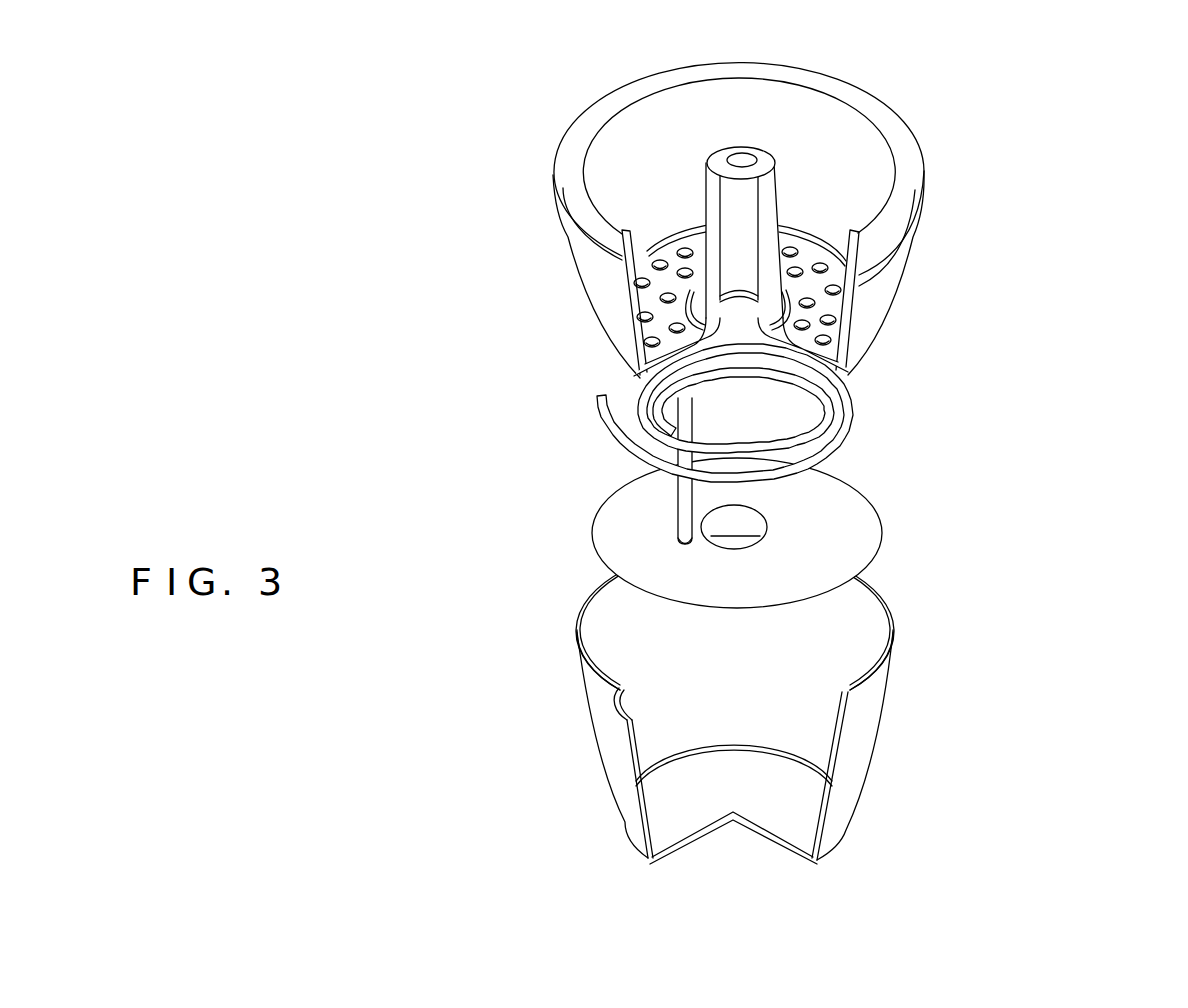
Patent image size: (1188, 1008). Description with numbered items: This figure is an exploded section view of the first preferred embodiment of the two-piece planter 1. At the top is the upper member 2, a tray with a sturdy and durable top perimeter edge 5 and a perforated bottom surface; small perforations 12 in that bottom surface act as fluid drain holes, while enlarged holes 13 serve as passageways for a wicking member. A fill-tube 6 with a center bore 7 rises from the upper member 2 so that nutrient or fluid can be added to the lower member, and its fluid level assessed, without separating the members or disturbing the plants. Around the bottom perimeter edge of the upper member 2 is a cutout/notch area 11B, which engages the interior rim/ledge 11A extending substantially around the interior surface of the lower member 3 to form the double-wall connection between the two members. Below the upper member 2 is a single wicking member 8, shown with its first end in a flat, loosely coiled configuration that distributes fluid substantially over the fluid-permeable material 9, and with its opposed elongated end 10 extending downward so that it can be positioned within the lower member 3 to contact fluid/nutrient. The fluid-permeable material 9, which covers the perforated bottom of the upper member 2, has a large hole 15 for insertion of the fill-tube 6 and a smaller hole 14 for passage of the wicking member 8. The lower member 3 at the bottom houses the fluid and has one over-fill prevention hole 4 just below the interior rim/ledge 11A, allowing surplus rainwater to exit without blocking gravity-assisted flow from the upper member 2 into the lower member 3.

The two-piece planter 1 is at (1060, 142).
The upper member 2 is at (764, 258).
The lower member 3 is at (768, 705).
The over-fill prevention hole 4 is at (630, 704).
The sturdy top edge 5 is at (570, 236).
The fill-tube 6 is at (780, 283).
The center bore 7 is at (735, 166).
The wicking member 8 is at (838, 433).
The fluid-permeable material 9 is at (803, 533).
The end of wicking member 10 is at (601, 548).
The interior rim/ledge 11A is at (838, 695).
The cutout/notch area 11B is at (872, 364).
The perforations 12 is at (736, 266).
The enlarged holes 13 is at (663, 301).
The hole in fluid-permeable material 14 is at (668, 540).
The hole in fluid-permeable material 15 is at (768, 527).